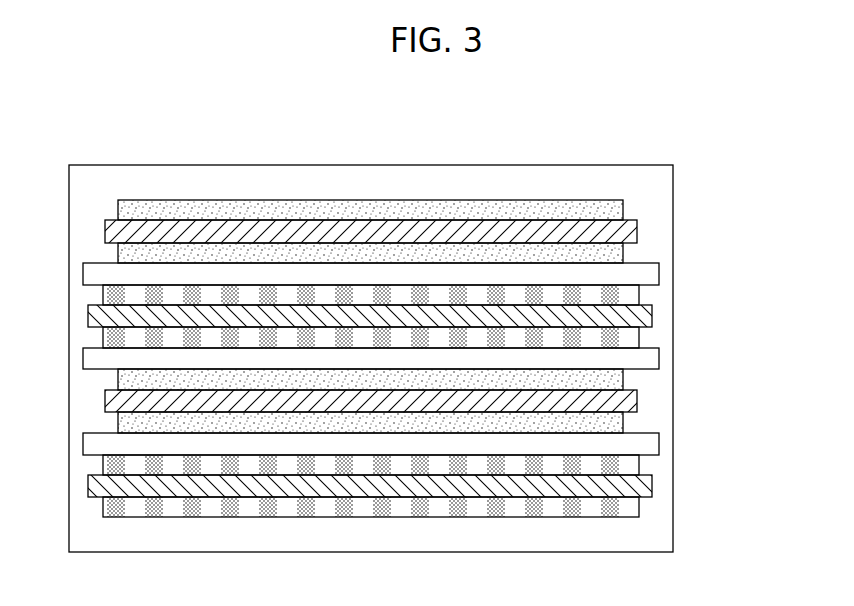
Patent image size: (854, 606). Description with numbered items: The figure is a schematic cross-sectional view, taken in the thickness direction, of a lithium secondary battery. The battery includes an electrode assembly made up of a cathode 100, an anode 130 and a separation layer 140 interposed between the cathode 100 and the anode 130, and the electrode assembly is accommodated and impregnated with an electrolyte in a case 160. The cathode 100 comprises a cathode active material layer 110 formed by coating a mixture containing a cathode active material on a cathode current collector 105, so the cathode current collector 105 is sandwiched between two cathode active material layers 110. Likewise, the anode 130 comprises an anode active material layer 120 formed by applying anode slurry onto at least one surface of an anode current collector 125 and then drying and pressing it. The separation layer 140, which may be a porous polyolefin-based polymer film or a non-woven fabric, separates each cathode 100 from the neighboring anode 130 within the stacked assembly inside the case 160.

The cathode 100 is at (452, 316).
The cathode current collector 105 is at (637, 229).
The cathode active material layer 110 is at (623, 206).
The anode active material layer 120 is at (639, 292).
The anode current collector 125 is at (652, 315).
The anode 130 is at (444, 401).
The separation layer 140 is at (547, 273).
The case 160 is at (673, 484).